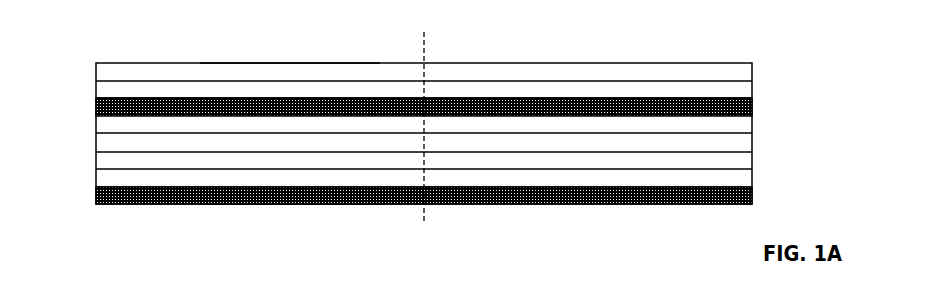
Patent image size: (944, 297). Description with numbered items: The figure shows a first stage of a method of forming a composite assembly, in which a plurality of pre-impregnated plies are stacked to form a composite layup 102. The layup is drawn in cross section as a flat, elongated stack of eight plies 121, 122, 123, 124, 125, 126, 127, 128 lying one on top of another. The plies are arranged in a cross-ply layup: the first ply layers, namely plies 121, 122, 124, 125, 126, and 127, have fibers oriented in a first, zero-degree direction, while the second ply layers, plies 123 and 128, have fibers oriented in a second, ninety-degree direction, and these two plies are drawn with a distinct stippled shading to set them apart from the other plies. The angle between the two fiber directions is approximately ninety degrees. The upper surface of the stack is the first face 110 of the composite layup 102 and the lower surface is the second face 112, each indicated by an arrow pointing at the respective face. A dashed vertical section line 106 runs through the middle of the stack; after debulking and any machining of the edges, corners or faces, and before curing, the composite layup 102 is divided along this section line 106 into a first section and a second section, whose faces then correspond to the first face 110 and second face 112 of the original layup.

The composite layup 102 is at (114, 19).
The section line 106 is at (425, 40).
The first face 110 is at (294, 36).
The second face 112 is at (299, 231).
The ply 121 is at (752, 73).
The ply 122 is at (752, 89).
The ply 123 is at (752, 105).
The ply 124 is at (752, 122).
The ply 125 is at (752, 143).
The ply 126 is at (752, 158).
The ply 127 is at (752, 178).
The ply 128 is at (752, 192).